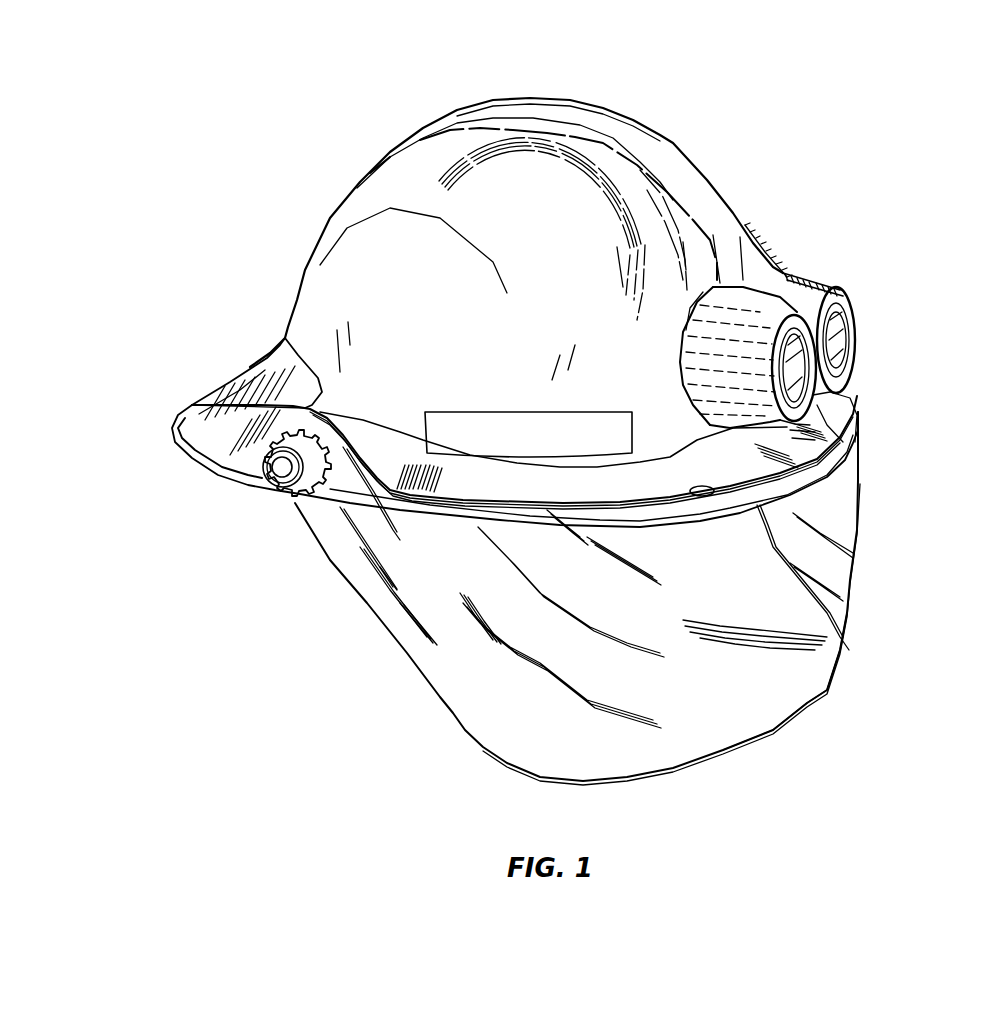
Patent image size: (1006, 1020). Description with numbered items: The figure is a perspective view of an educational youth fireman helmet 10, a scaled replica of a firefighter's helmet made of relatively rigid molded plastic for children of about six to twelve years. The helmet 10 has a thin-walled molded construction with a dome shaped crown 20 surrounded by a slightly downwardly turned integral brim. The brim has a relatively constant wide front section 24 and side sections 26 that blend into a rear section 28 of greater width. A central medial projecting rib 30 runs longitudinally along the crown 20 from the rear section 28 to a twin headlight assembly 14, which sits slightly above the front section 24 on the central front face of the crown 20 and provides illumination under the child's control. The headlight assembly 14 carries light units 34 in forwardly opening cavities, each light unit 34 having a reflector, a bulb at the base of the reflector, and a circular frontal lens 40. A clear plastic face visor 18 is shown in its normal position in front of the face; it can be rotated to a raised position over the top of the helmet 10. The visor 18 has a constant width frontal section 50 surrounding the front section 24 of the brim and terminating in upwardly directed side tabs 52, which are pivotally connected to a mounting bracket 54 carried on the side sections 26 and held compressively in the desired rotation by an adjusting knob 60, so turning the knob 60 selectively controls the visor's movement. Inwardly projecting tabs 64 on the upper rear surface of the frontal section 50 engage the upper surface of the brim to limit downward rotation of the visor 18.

The educational youth fireman helmet 10 is at (245, 201).
The twin headlight assembly 14 is at (833, 315).
The clear face visor 18 is at (450, 713).
The dome shaped crown 20 is at (296, 280).
The front section 24 is at (783, 445).
The side sections 26 is at (203, 453).
The rear section 28 is at (245, 380).
The central medial projecting rib 30 is at (465, 110).
The light units 34 is at (813, 398).
The circular frontal lens 40 is at (800, 378).
The frontal section 50 is at (780, 687).
The side tabs 52 is at (330, 500).
The mounting bracket 54 is at (305, 408).
The adjusting knob 60 is at (223, 513).
The inwardly projecting tabs 64 is at (703, 493).